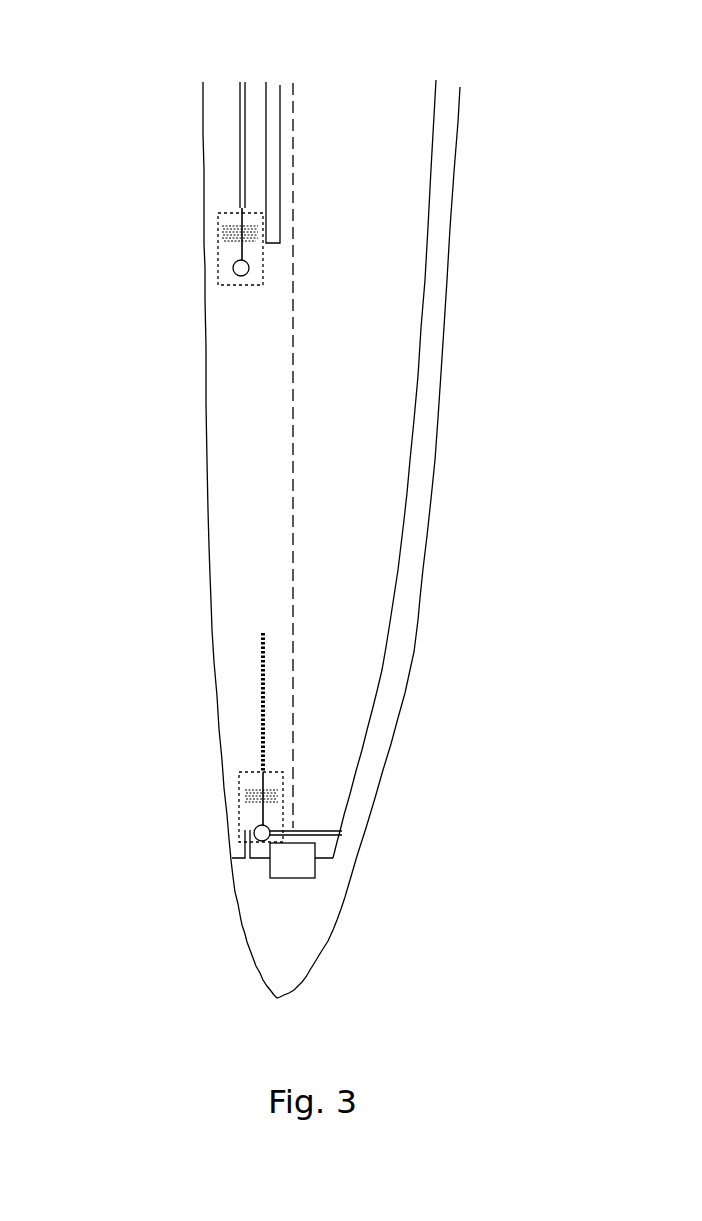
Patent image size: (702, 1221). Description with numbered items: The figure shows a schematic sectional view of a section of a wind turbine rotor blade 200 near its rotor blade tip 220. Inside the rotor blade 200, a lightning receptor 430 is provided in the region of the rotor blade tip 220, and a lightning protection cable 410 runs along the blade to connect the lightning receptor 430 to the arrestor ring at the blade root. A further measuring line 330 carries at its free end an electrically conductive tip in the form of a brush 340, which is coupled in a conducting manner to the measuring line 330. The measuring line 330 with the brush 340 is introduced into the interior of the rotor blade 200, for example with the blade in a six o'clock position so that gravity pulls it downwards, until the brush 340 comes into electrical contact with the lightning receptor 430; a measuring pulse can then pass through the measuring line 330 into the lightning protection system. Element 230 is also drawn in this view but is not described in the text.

The rotor blade 200 is at (420, 598).
The rotor blade tip 220 is at (306, 980).
The down conductor 230 is at (274, 95).
The measuring line 330 is at (240, 107).
The brush 340 is at (230, 251).
The lightning protection cable 410 is at (292, 492).
The lightning receptor 430 is at (317, 871).